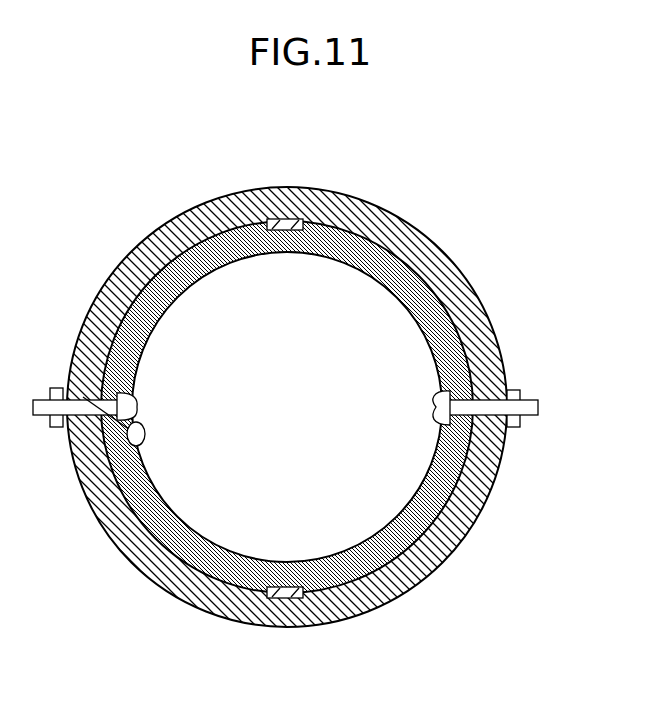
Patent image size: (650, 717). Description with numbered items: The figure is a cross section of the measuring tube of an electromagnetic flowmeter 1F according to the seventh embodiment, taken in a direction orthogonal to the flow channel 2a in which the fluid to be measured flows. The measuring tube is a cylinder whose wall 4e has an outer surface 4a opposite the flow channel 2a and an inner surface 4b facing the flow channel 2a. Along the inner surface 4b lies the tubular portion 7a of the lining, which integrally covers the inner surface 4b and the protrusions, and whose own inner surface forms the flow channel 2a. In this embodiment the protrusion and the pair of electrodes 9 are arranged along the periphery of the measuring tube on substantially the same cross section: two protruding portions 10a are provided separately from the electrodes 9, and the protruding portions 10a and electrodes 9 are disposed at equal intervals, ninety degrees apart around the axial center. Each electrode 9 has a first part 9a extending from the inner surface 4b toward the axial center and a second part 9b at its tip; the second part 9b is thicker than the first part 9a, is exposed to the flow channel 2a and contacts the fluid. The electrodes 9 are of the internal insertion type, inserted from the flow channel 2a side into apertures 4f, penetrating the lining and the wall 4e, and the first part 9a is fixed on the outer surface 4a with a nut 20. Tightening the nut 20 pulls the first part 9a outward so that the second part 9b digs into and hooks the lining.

The electromagnetic flowmeter 1F is at (411, 190).
The flow channel 2a is at (342, 510).
The outer surface 4a is at (203, 203).
The inner surface 4b is at (125, 507).
The wall 4e is at (142, 227).
The aperture 4f is at (478, 418).
The tubular portion 7a is at (417, 497).
The electrode 9 is at (315, 401).
The first part 9a is at (85, 412).
The second part 9b is at (137, 420).
The protruding portion 10a is at (283, 219).
The nut 20 is at (522, 391).